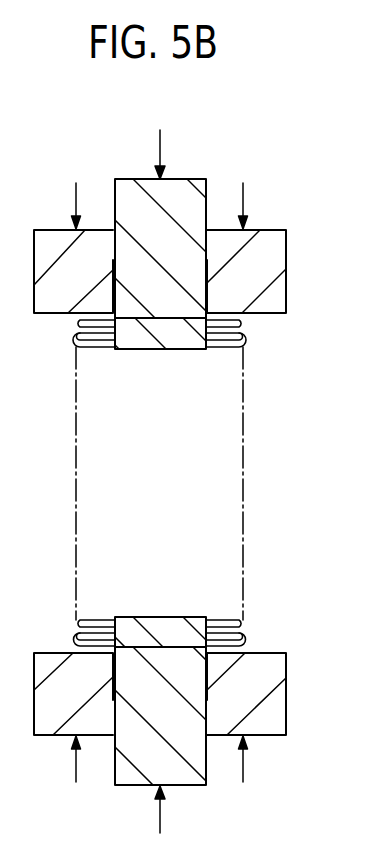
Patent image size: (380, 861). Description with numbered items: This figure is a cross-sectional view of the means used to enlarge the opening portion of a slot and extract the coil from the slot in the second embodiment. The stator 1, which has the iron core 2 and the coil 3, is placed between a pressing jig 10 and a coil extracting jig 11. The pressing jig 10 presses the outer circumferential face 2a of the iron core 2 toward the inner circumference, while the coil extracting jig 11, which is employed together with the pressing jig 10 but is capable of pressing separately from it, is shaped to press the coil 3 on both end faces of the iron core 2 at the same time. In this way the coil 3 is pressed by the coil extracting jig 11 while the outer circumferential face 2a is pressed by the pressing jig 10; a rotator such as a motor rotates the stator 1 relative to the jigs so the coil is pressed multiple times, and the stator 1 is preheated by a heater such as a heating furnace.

The stator 1 is at (252, 482).
The iron core 2 is at (172, 626).
The outer circumferential face 2a is at (164, 318).
The coil 3 is at (243, 328).
The pressing jig 10 is at (178, 192).
The coil extracting jig 11 is at (272, 253).